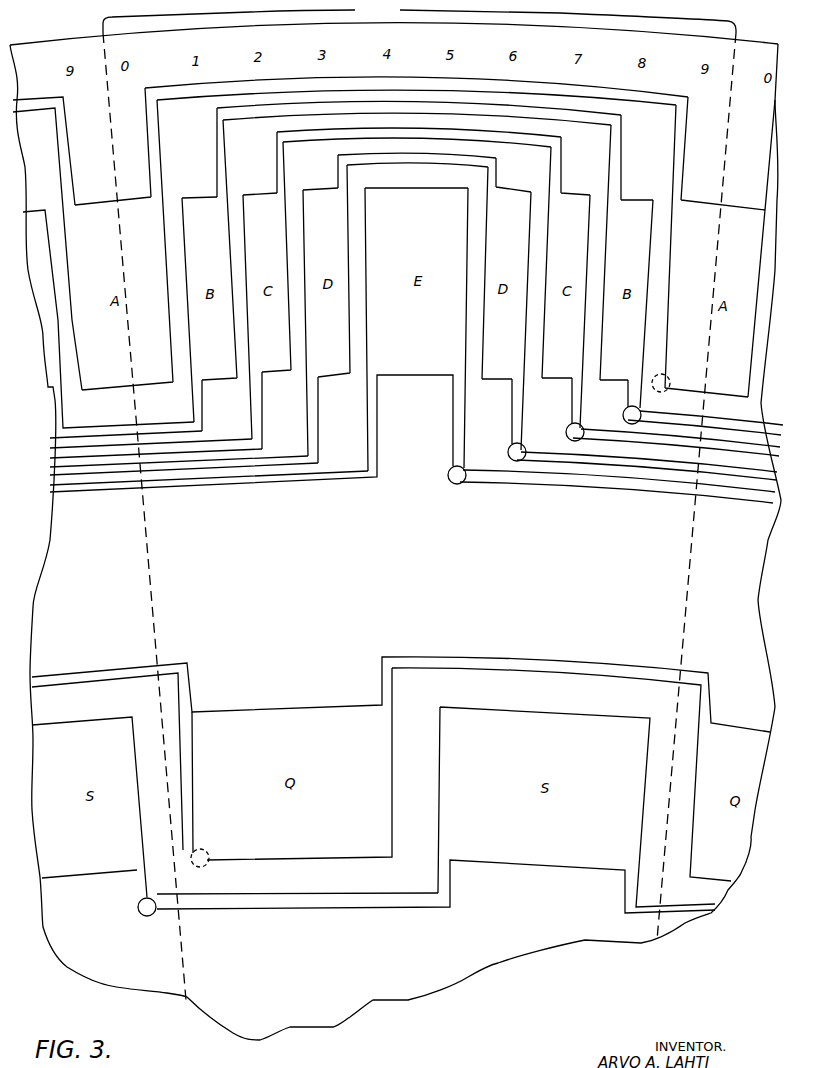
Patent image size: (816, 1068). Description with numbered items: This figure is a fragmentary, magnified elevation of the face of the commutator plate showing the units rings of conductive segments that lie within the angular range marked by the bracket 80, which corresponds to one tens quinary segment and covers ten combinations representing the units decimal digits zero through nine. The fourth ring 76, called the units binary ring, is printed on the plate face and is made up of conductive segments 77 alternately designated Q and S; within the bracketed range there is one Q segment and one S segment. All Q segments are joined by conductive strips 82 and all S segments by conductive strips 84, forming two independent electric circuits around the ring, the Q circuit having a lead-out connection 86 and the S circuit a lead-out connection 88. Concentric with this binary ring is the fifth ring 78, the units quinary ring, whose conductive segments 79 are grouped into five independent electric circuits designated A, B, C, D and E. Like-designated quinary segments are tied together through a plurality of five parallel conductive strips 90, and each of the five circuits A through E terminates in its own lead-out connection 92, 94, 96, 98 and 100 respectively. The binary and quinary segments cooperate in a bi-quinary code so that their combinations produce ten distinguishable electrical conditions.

The fourth ring 76 is at (346, 693).
The conductive segments 77 is at (515, 858).
The fifth ring 78 is at (406, 452).
The conductive segments 79 is at (334, 207).
The bracket 80 is at (419, 18).
The conductive strips 82 is at (470, 658).
The conductive strips 84 is at (402, 896).
The lead-out connection 86 is at (204, 867).
The lead-out connection 88 is at (138, 906).
The parallel conductive strips 90 is at (188, 485).
The lead-out connection 92 is at (666, 393).
The lead-out connection 94 is at (624, 414).
The lead-out connection 96 is at (567, 435).
The lead-out connection 98 is at (509, 450).
The lead-out connection 100 is at (452, 485).